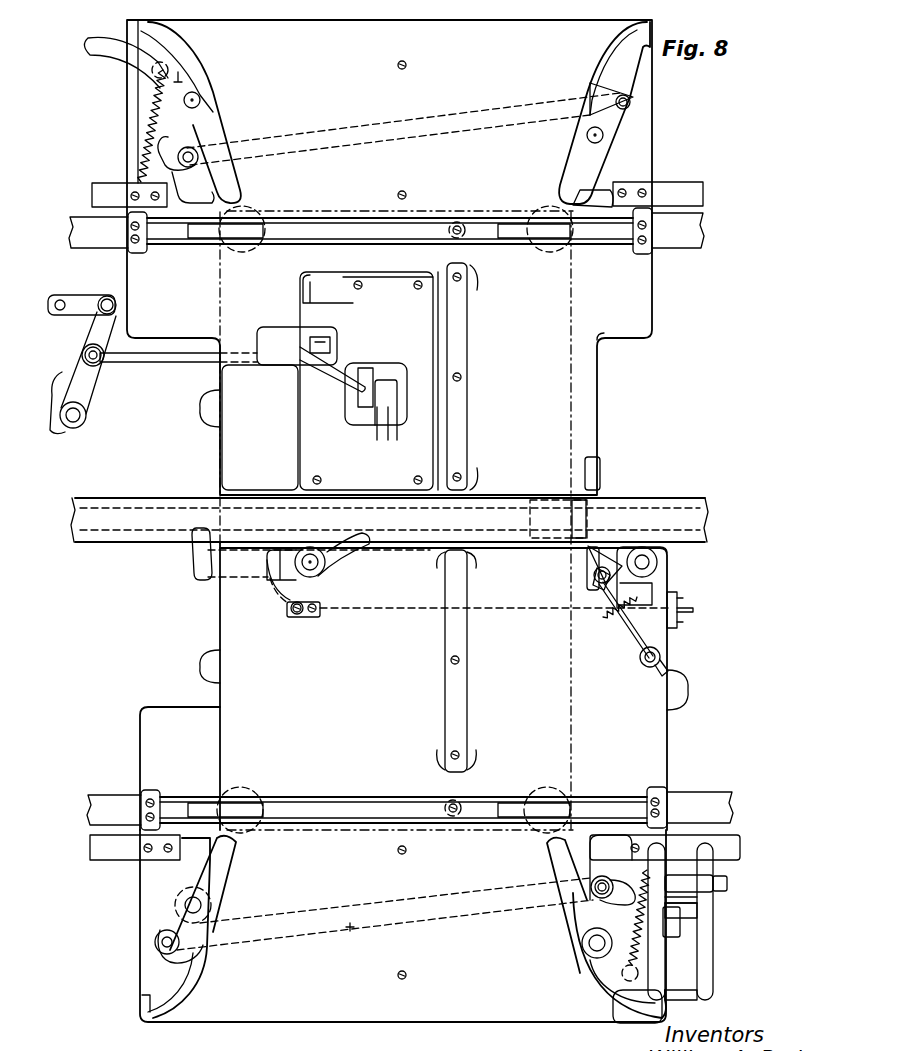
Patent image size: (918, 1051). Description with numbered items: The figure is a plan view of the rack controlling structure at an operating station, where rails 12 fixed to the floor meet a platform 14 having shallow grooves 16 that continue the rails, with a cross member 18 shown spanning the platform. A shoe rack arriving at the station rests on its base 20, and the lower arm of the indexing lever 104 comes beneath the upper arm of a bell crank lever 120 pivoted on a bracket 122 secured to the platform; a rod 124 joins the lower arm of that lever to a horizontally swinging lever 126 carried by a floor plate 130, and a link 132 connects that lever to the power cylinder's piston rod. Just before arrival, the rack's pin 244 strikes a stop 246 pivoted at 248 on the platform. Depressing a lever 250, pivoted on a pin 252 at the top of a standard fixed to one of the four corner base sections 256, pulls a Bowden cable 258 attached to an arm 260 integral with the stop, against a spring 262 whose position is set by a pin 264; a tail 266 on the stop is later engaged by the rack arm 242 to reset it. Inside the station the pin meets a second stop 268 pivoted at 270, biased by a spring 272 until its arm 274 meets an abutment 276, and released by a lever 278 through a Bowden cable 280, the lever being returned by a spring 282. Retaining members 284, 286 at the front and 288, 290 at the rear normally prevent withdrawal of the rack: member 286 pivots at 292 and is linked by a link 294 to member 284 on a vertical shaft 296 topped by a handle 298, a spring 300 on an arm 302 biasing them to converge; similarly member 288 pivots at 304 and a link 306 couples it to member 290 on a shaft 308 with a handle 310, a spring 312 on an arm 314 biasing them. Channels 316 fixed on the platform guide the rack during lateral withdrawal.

The rails 12 is at (72, 230).
The platform 14 is at (655, 325).
The shallow grooves 16 is at (178, 248).
The cross rail 18 is at (690, 497).
The base 20 is at (218, 738).
The lever 104 is at (388, 378).
The bell crank lever 120 is at (366, 366).
The bracket 122 is at (305, 414).
The rod 124 is at (190, 364).
The lever 126 is at (90, 410).
The plate 130 is at (56, 432).
The link 132 is at (88, 296).
The arm 242 is at (590, 520).
The pin 244 is at (575, 565).
The stop 246 is at (192, 570).
The pivot 248 is at (312, 570).
The lever 250 is at (715, 966).
The pin 252 is at (727, 882).
The base sections 256 is at (205, 60).
The Bowden cable 258 is at (358, 614).
The arm 260 is at (285, 610).
The spring 262 is at (705, 870).
The pin 264 is at (700, 900).
The tail 266 is at (365, 545).
The second stop 268 is at (585, 575).
The pivot 270 is at (658, 562).
The spring 272 is at (616, 628).
The arm 274 is at (655, 586).
The abutment 276 is at (603, 614).
The lever 278 is at (630, 1010).
The Bowden cable 280 is at (664, 653).
The spring 282 is at (688, 836).
The retaining member 284 is at (550, 858).
The retaining member 286 is at (228, 862).
The retaining member 288 is at (568, 162).
The retaining member 290 is at (243, 188).
The pivot 292 is at (185, 905).
The link 294 is at (349, 935).
The vertical shaft 296 is at (588, 944).
The handle 298 is at (690, 993).
The spring 300 is at (605, 905).
The arm 302 is at (590, 972).
The pivot 304 is at (605, 134).
The link 306 is at (448, 108).
The shaft 308 is at (200, 98).
The handle 310 is at (105, 40).
The spring 312 is at (148, 117).
The arm 314 is at (182, 70).
The channels 316 is at (470, 388).